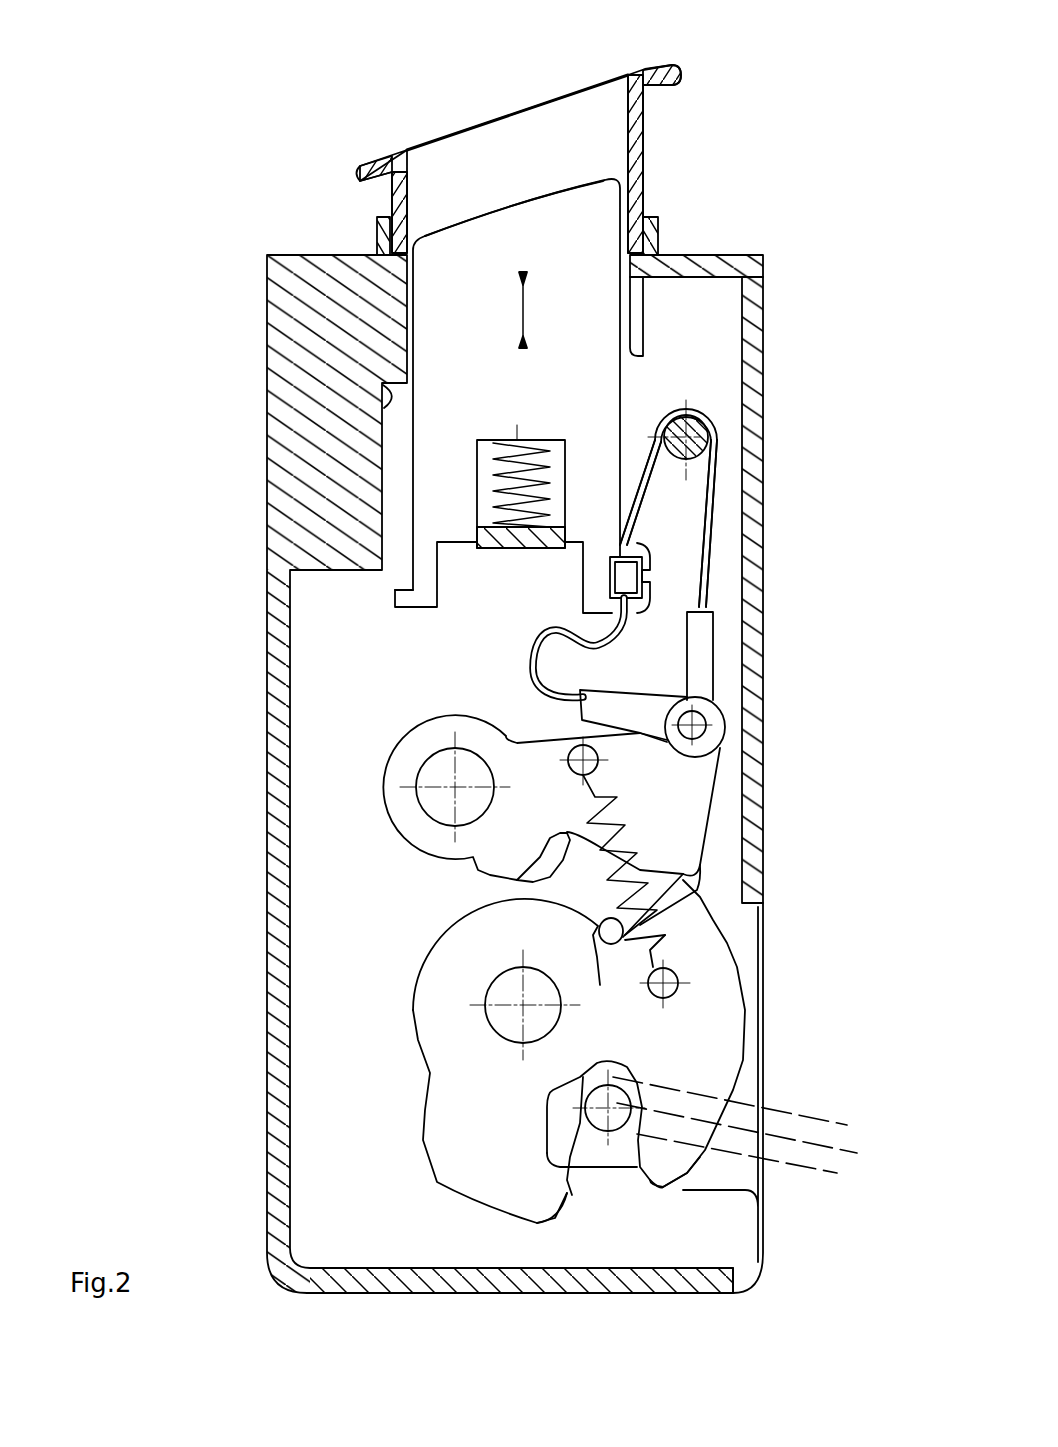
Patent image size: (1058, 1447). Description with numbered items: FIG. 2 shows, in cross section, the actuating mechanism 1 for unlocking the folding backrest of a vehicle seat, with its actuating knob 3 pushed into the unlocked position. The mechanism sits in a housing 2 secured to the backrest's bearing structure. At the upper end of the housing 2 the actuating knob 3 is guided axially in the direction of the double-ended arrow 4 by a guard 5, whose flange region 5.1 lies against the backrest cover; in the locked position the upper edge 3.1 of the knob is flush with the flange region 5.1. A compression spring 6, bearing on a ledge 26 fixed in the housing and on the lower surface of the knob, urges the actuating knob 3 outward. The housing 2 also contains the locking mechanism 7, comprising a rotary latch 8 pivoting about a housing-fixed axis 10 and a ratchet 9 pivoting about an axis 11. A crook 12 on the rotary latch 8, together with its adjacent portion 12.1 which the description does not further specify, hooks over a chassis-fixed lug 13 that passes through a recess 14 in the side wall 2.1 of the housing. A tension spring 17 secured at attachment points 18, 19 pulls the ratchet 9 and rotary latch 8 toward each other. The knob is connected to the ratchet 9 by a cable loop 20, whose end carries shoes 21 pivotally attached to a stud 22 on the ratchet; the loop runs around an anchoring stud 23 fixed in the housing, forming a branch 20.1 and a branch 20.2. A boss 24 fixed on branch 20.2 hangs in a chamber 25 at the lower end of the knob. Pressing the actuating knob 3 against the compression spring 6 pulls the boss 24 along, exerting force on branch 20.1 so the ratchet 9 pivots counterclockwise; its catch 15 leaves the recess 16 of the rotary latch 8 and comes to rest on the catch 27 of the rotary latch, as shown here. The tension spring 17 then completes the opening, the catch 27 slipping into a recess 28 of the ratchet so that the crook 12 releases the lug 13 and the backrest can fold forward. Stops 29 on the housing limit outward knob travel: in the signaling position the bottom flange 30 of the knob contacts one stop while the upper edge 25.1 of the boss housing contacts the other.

The actuating mechanism 1 is at (222, 157).
The housing 2 is at (270, 660).
The side wall 2.1 is at (765, 1027).
The actuating knob 3 is at (600, 210).
The upper edge 3.1 is at (474, 213).
The double-ended arrow 4 is at (523, 305).
The guard 5 is at (645, 130).
The flange region 5.1 is at (648, 66).
The compression spring 6 is at (497, 487).
The locking mechanism 7 is at (322, 927).
The rotary latch 8 is at (457, 1090).
The ratchet 9 is at (412, 833).
The axis 10 is at (507, 1020).
The axis 11 is at (433, 803).
The crook 12 is at (600, 1177).
The clamp edge 12.1 is at (572, 1195).
The lug 13 is at (625, 1103).
The recess 14 is at (725, 1168).
The catch 15 is at (682, 872).
The recess 16 is at (605, 972).
The tension spring 17 is at (665, 935).
The attachment point 18 is at (598, 766).
The attachment point 19 is at (678, 983).
The cable loop 20 is at (698, 412).
The branch 20.1 is at (710, 533).
The branch 20.2 is at (533, 660).
The shoes 21 is at (697, 655).
The stud 22 is at (726, 732).
The anchoring stud 23 is at (700, 437).
The boss 24 is at (630, 578).
The chamber 25 is at (642, 607).
The upper edge 25.1 is at (625, 545).
The ledge 26 is at (517, 440).
The catch 27 is at (690, 890).
The recess 28 is at (517, 880).
The stops 29 is at (390, 395).
The bottom flange 30 is at (393, 577).